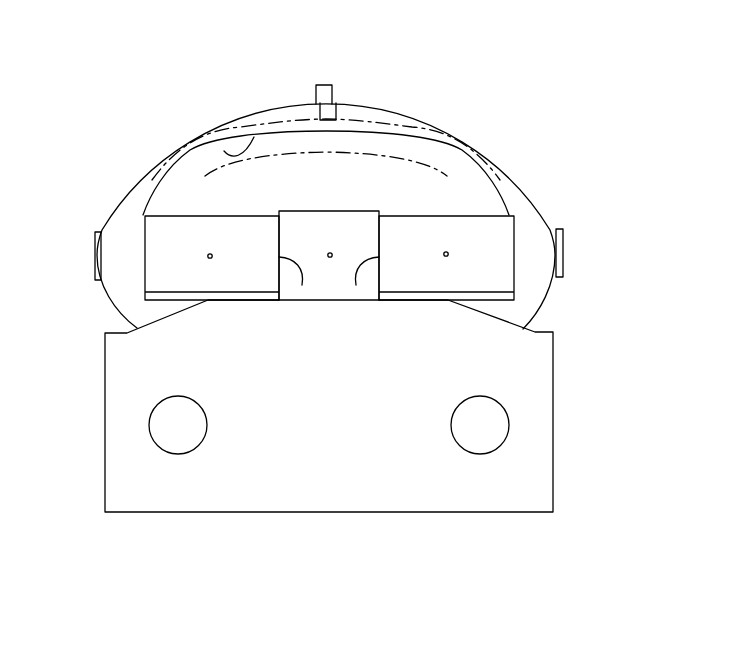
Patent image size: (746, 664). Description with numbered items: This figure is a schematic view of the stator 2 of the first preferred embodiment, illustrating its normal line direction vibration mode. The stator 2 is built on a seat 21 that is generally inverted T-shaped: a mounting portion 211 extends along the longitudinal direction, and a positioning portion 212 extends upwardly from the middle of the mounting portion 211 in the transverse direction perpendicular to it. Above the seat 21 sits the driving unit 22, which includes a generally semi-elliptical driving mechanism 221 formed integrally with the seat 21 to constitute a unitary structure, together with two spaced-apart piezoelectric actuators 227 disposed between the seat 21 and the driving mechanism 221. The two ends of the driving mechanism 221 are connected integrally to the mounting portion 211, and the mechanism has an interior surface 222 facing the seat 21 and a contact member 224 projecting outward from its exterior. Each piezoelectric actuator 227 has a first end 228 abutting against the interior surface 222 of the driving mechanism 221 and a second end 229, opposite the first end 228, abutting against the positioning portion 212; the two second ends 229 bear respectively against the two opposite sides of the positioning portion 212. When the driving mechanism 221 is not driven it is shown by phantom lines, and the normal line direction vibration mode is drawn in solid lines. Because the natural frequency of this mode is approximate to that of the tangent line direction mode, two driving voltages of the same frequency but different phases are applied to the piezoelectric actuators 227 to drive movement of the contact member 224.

The stator 2 is at (118, 116).
The seat 21 is at (567, 465).
The mounting portion 211 is at (547, 387).
The positioning portion 212 is at (328, 211).
The driving unit 22 is at (518, 152).
The driving mechanism 221 is at (469, 129).
The interior surface 222 is at (224, 151).
The contact member 224 is at (339, 68).
The piezoelectric actuators 227 is at (178, 216).
The first end 228 is at (145, 253).
The second end 229 is at (302, 285).